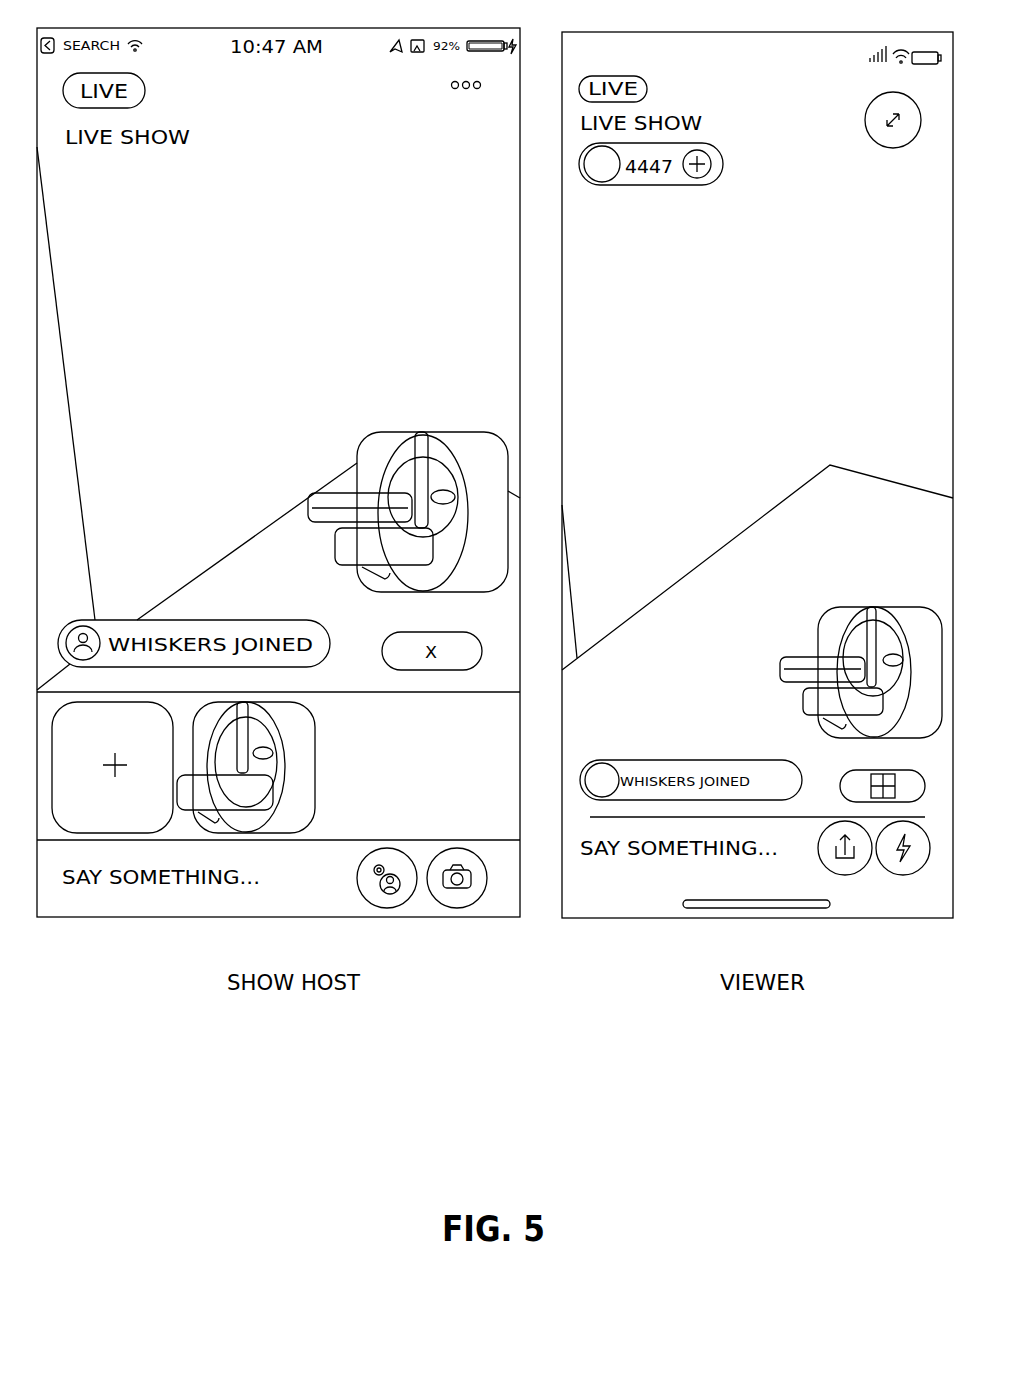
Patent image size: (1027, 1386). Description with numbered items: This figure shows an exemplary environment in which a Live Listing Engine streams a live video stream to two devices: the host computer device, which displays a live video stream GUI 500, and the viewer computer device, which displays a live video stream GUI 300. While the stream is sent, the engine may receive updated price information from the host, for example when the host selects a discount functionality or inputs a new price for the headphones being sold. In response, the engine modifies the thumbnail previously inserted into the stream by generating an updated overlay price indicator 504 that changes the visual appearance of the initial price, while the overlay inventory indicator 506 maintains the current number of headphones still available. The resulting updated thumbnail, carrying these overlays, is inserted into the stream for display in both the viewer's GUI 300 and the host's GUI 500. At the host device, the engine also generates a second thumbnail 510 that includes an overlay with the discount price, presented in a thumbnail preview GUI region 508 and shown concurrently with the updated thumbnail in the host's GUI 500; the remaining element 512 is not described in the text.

The live video stream GUI of the host computer device 500 is at (278, 472).
The live video stream GUI of the viewer computer device 300 is at (757, 475).
The updated overlay price indicator 504 is at (780, 664).
The overlay inventory indicator 506 is at (803, 703).
The thumbnail preview GUI region 508 is at (235, 767).
The second thumbnail 510 is at (254, 767).
The product price indicator 512 is at (177, 791).